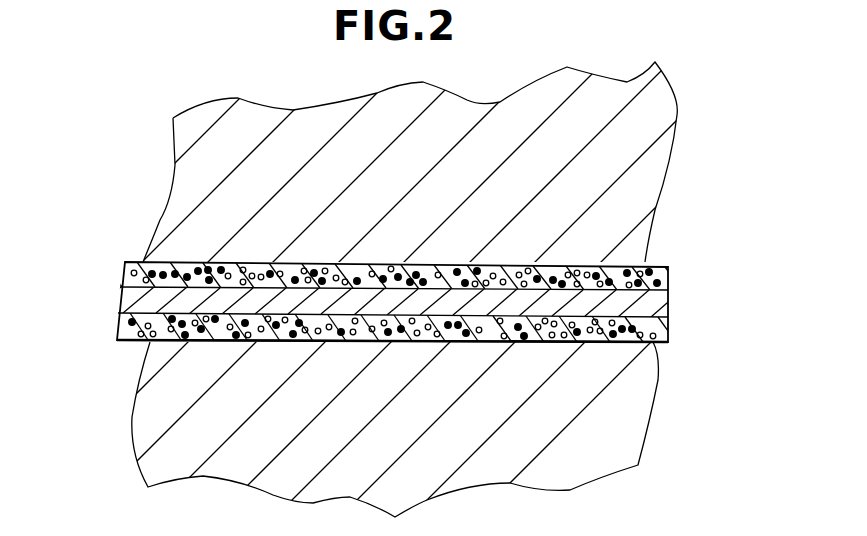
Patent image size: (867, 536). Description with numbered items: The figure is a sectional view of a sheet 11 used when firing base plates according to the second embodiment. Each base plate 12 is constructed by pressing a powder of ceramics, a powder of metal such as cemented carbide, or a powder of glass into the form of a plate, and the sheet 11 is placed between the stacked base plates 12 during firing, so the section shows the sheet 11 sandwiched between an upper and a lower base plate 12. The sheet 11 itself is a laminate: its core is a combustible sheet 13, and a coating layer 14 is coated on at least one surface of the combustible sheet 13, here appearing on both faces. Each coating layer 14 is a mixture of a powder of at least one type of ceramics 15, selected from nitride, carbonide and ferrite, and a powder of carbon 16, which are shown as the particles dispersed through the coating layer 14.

The sheet 11 is at (114, 302).
The base plate 12 is at (615, 172).
The combustible sheet 13 is at (655, 302).
The coating layer 14 is at (668, 277).
The powder of ceramics 15 is at (333, 280).
The powder of carbon 16 is at (325, 335).